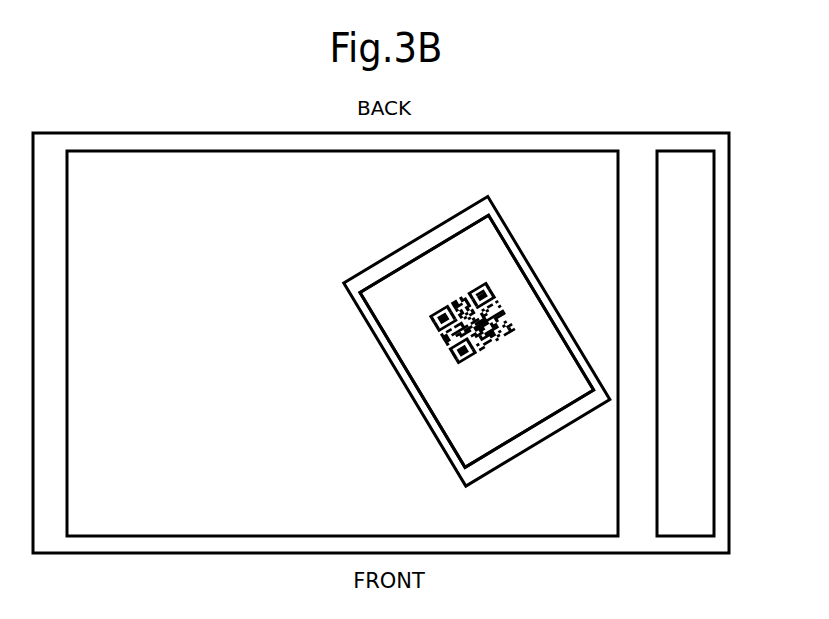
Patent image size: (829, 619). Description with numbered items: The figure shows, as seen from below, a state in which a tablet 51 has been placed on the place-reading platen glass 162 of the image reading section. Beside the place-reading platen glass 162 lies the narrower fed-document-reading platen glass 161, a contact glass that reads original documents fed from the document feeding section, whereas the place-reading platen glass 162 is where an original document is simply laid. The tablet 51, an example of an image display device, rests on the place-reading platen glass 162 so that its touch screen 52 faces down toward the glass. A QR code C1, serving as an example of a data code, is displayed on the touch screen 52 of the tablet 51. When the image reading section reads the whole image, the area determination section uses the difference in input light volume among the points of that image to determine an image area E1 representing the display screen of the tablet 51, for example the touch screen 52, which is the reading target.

The place-reading platen glass 162 is at (233, 502).
The fed-document-reading platen glass 161 is at (688, 502).
The tablet 51 is at (479, 346).
The touch screen 52 is at (443, 412).
The image area E1 is at (465, 435).
The QR code C1 is at (500, 307).